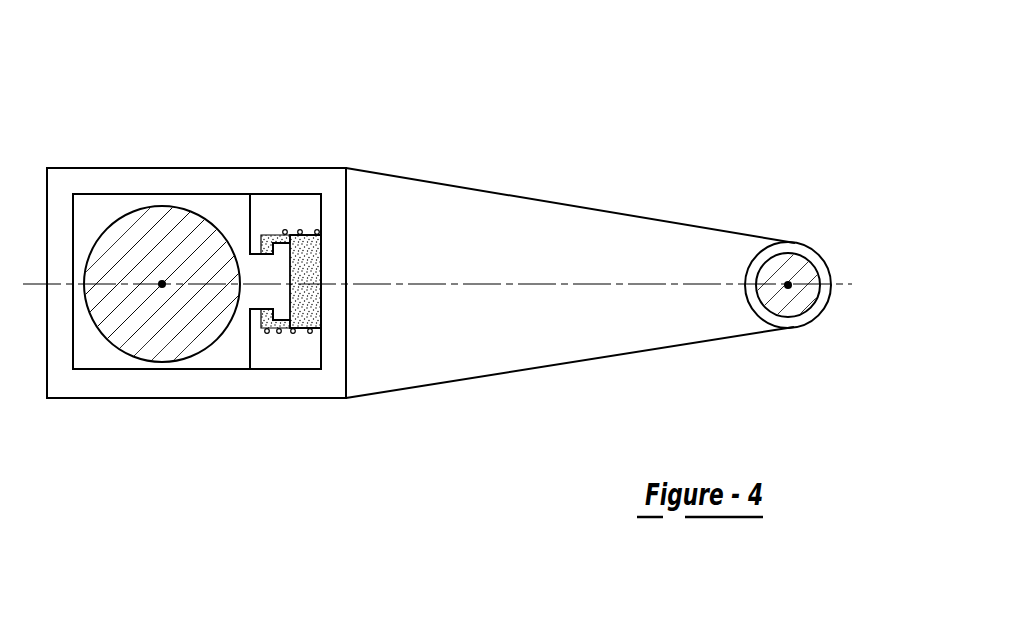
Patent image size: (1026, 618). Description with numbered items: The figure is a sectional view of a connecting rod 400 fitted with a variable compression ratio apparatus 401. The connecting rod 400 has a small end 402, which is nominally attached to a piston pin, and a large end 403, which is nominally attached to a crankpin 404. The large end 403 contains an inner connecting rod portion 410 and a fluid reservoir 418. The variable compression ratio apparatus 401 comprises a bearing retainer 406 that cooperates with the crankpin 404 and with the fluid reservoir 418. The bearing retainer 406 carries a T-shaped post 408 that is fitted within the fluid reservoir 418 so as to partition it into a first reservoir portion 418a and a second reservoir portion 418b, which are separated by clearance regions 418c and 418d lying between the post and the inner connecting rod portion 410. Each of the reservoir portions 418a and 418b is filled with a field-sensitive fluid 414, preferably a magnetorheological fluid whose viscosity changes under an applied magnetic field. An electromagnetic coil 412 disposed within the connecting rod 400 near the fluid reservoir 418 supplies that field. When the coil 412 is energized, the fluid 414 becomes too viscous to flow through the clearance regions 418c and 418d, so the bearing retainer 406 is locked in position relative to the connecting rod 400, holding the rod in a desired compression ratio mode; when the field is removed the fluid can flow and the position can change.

The connecting rod 400 is at (475, 51).
The variable compression ratio apparatus 401 is at (287, 512).
The small end 402 is at (680, 222).
The large end 403 is at (60, 168).
The crankpin 404 is at (152, 327).
The bearing retainer 406 is at (108, 202).
The T-shaped post 408 is at (258, 237).
The inner connecting rod portion 410 is at (297, 353).
The electromagnetic coil 412 is at (323, 231).
The field-sensitive fluid 414 is at (321, 294).
The fluid reservoir 418 is at (322, 272).
The first reservoir portion 418a is at (264, 233).
The second reservoir portion 418b is at (315, 333).
The clearance region 418c is at (283, 232).
The clearance region 418d is at (288, 333).